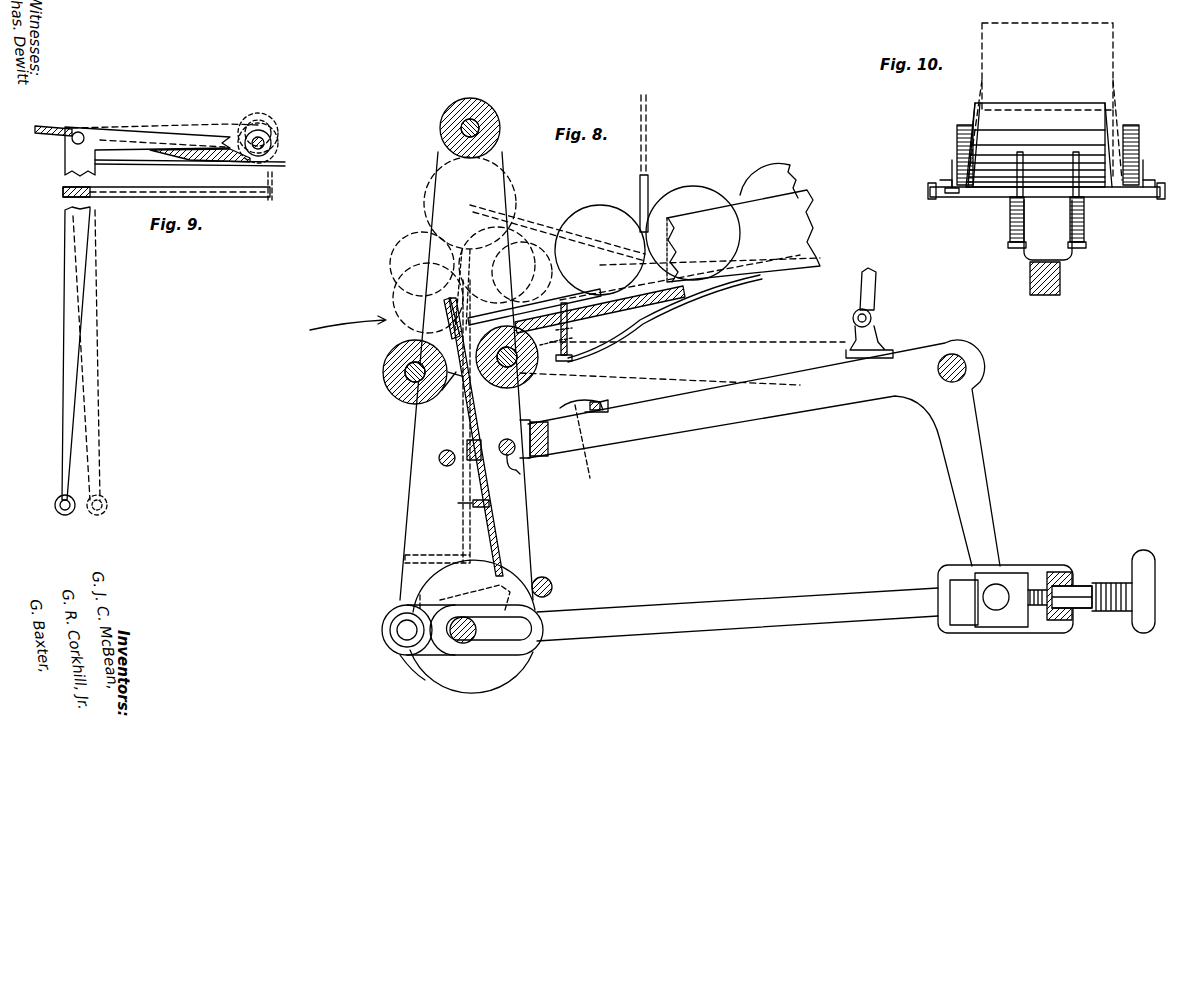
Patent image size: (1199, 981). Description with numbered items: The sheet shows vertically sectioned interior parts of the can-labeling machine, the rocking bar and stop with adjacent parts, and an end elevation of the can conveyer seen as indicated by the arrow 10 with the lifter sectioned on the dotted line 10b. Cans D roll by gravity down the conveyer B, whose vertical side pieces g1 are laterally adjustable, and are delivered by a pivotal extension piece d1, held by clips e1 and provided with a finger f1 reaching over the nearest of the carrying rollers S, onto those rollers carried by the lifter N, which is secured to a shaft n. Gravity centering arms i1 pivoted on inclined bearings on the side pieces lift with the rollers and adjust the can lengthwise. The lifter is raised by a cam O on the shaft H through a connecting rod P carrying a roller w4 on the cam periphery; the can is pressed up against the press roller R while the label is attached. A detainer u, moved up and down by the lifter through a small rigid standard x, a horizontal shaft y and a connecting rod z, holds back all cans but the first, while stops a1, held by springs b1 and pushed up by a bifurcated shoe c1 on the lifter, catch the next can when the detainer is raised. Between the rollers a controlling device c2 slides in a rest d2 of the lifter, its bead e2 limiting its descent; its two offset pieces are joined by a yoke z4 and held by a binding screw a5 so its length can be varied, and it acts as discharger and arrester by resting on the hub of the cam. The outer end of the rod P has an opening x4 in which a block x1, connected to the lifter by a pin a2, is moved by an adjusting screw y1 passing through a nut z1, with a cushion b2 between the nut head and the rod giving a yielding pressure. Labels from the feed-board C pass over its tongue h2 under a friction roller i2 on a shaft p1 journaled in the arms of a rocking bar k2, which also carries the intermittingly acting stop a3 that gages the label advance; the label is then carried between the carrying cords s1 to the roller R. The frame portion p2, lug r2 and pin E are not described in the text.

In FIG. 9, the feed-board C is at (62, 128).
In FIG. 9, the rocking bar k2 is at (161, 150).
In FIG. 9, the friction roller i2 is at (236, 162).
In FIG. 9, the tongue h2 is at (282, 167).
In FIG. 9, the shaft p1 is at (264, 143).
In FIG. 9, the stop a3 is at (258, 200).
In FIG. 8, the frame p2 is at (413, 452).
In FIG. 8, the arrow 10 is at (348, 316).
In FIG. 8, the press roller R is at (498, 120).
In FIG. 8, the carrying cords s1 is at (398, 398).
In FIG. 8, the carrying rollers S is at (507, 390).
In FIG. 8, the bead e2 is at (445, 392).
In FIG. 8, the controlling device c2 is at (506, 512).
In FIG. 8, the rest d2 is at (466, 446).
In FIG. 8, the clips e1 is at (447, 466).
In FIG. 10, the clips e1 is at (928, 190).
In FIG. 8, the yoke z4 is at (489, 504).
In FIG. 8, the binding screw a5 is at (452, 507).
In FIG. 8, the finger f1 is at (540, 305).
In FIG. 10, the finger f1 is at (950, 198).
In FIG. 8, the centering arms i1 is at (470, 318).
In FIG. 10, the centering arms i1 is at (952, 160).
In FIG. 8, the extension piece d1 is at (545, 333).
In FIG. 10, the extension piece d1 is at (1138, 200).
In FIG. 8, the stops a1 is at (556, 333).
In FIG. 10, the stops a1 is at (1010, 215).
In FIG. 8, the springs b1 is at (640, 335).
In FIG. 10, the springs b1 is at (1070, 207).
In FIG. 8, the detainer u is at (636, 194).
In FIG. 8, the can D is at (676, 229).
In FIG. 8, the side pieces g1 is at (743, 236).
In FIG. 10, the side pieces g1 is at (962, 123).
In FIG. 8, the gravity conveyer B is at (690, 250).
In FIG. 10, the gravity conveyer B is at (1150, 130).
In FIG. 8, the lifter N is at (760, 453).
In FIG. 10, the lifter N is at (1048, 295).
In FIG. 8, the shaft n is at (966, 368).
In FIG. 8, the bifurcated shoe c1 is at (590, 401).
In FIG. 10, the bifurcated shoe c1 is at (1024, 258).
In FIG. 8, the dotted line 10b is at (595, 446).
In FIG. 8, the connecting rod z is at (872, 292).
In FIG. 8, the horizontal shaft y is at (852, 318).
In FIG. 8, the standard x is at (874, 340).
In FIG. 8, the connecting rod P is at (737, 614).
In FIG. 8, the cam O is at (472, 626).
In FIG. 8, the shaft H is at (470, 640).
In FIG. 8, the roller w4 is at (382, 630).
In FIG. 10, the roller w4 is at (975, 142).
In FIG. 8, the lug r2 is at (420, 676).
In FIG. 8, the pin E is at (548, 578).
In FIG. 8, the opening x4 is at (965, 618).
In FIG. 8, the block x1 is at (1015, 618).
In FIG. 8, the pin a2 is at (996, 597).
In FIG. 8, the cushion b2 is at (1058, 572).
In FIG. 8, the nut z1 is at (1080, 612).
In FIG. 8, the adjusting screw y1 is at (1112, 578).